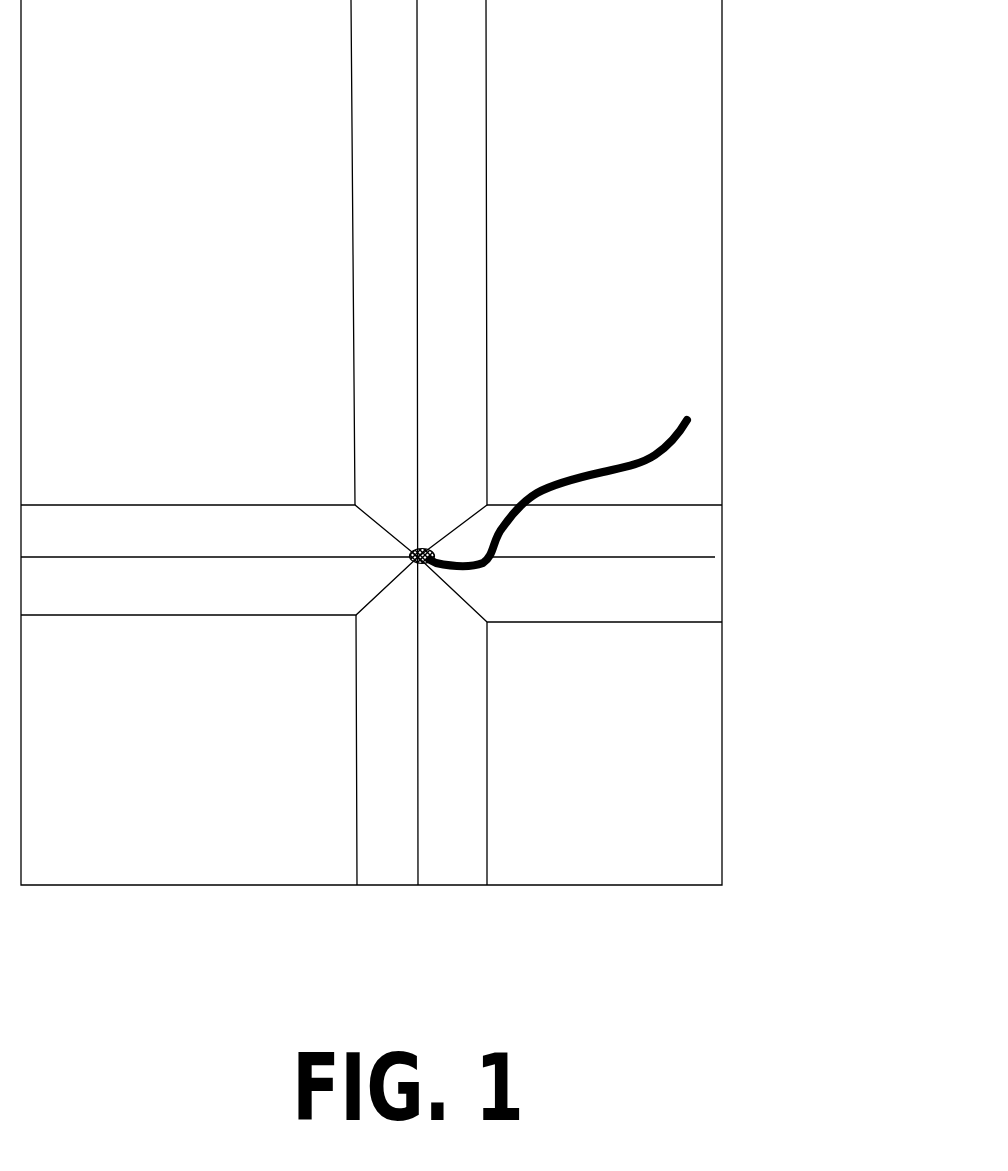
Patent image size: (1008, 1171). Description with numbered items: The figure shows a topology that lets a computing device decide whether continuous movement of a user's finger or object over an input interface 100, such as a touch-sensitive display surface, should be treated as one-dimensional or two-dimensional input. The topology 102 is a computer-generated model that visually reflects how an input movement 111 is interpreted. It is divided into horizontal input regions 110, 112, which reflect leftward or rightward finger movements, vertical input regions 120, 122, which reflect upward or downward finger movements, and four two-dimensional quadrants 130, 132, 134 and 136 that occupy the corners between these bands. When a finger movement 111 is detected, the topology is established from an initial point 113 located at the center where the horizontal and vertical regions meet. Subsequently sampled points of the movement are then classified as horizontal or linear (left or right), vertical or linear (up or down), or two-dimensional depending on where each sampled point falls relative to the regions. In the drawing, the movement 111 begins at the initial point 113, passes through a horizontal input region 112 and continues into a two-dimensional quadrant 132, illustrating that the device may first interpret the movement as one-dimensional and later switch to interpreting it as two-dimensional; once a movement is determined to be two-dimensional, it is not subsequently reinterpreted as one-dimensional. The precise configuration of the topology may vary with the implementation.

The input interface 100 is at (108, 58).
The topology 102 is at (612, 337).
The horizontal input region 110 is at (219, 560).
The input movement 111 is at (602, 470).
The horizontal input region 112 is at (570, 563).
The initial point 113 is at (447, 515).
The vertical input region 120 is at (419, 442).
The vertical input region 122 is at (421, 750).
The two-dimensional quadrant 130 is at (289, 363).
The two-dimensional quadrant 132 is at (563, 363).
The two-dimensional quadrant 134 is at (288, 723).
The two-dimensional quadrant 136 is at (563, 750).